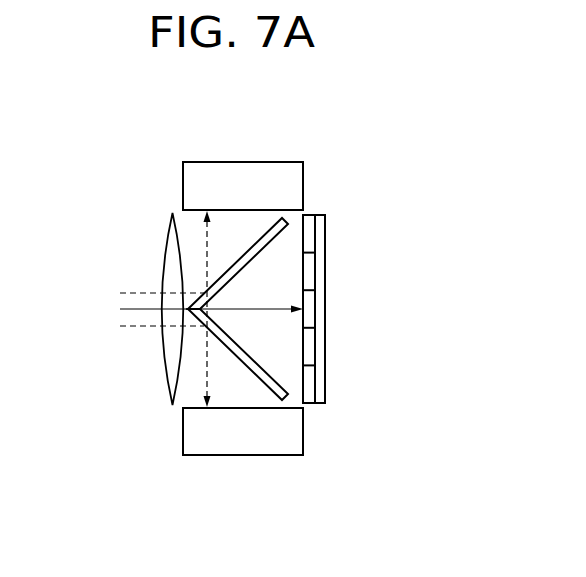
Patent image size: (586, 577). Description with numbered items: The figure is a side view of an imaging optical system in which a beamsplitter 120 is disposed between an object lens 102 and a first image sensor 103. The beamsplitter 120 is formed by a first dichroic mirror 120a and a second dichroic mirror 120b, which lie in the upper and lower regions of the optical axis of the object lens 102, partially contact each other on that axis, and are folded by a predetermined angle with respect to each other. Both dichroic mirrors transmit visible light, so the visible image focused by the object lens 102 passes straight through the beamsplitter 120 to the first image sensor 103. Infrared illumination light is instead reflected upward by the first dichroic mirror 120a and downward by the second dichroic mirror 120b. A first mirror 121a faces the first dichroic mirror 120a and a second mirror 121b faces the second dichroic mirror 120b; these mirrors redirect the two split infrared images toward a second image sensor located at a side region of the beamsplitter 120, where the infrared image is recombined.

The object lens 102 is at (168, 242).
The first image sensor 103 is at (318, 213).
The beamsplitter 120 is at (319, 309).
The first dichroic mirror 120a is at (277, 235).
The second dichroic mirror 120b is at (258, 365).
The first mirror 121a is at (243, 163).
The second mirror 121b is at (238, 453).